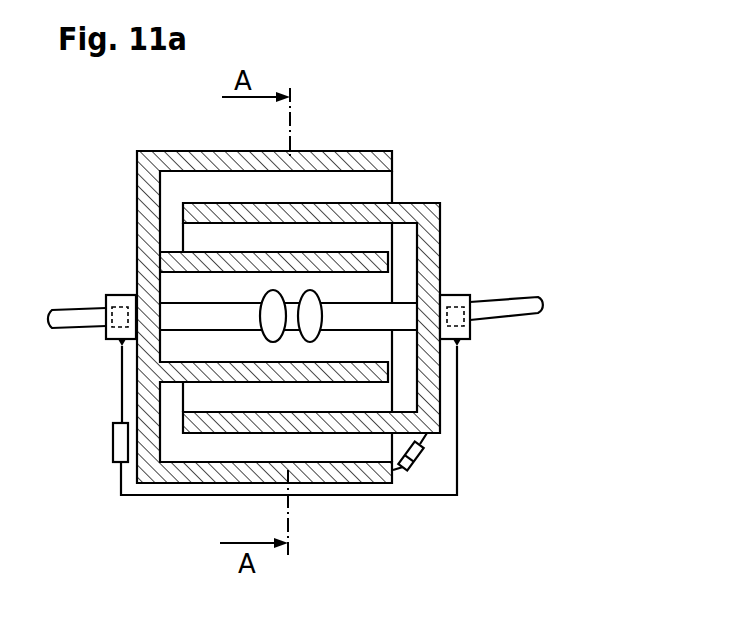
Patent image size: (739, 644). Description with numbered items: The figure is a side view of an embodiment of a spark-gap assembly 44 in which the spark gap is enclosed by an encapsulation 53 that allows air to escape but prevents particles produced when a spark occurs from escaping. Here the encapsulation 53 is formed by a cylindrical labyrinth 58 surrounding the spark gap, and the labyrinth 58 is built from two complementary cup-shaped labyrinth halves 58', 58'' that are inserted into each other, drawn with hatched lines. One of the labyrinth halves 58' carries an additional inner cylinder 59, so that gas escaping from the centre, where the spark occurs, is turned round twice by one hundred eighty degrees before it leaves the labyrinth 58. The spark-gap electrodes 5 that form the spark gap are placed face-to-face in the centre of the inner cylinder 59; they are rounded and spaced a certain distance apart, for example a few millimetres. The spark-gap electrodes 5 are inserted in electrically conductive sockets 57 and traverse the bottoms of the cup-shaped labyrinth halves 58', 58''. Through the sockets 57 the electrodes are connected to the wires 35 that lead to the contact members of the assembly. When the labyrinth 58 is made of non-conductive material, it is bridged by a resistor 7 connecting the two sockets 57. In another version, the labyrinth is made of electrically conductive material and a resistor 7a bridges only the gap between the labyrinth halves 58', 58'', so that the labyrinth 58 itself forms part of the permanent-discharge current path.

The spark-gap assembly 44 is at (512, 126).
The labyrinth half 58' is at (329, 282).
The labyrinth half 58'' is at (333, 278).
The labyrinth 58 is at (333, 278).
The encapsulation 53 is at (458, 201).
The inner cylinder 59 is at (388, 264).
The spark-gap electrodes 5 is at (311, 301).
The wires 35 is at (67, 315).
The sockets 57 is at (107, 338).
The resistor 7 is at (113, 440).
The resistor 7a is at (407, 466).